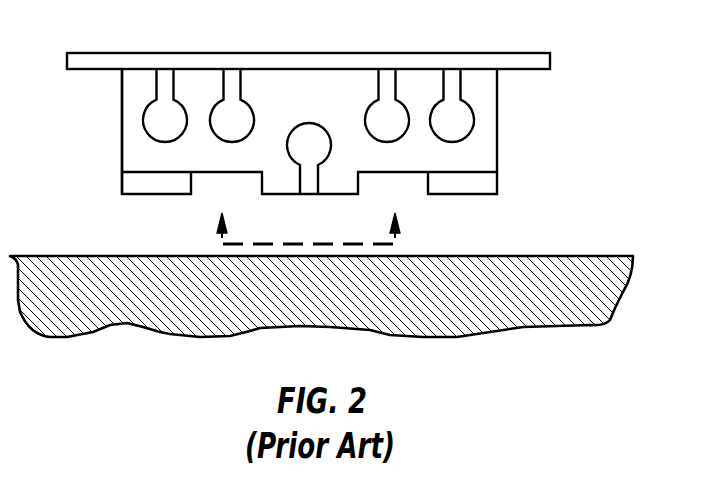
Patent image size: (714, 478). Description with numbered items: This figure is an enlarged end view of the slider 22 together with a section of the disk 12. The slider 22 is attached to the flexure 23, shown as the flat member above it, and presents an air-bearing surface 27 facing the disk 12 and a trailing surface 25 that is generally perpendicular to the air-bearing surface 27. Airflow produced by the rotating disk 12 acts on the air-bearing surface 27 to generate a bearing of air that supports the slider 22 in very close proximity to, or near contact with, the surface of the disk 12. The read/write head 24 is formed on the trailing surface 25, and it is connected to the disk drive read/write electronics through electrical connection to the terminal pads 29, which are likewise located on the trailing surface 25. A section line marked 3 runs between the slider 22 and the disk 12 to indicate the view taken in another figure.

The disk 12 is at (610, 293).
The slider 22 is at (497, 157).
The flexure 23 is at (533, 53).
The read/write head 24 is at (308, 127).
The trailing surface 25 is at (138, 156).
The air-bearing surface 27 is at (158, 195).
The terminal pads 29 is at (212, 119).
The section line for FIG. 3 is at (310, 212).